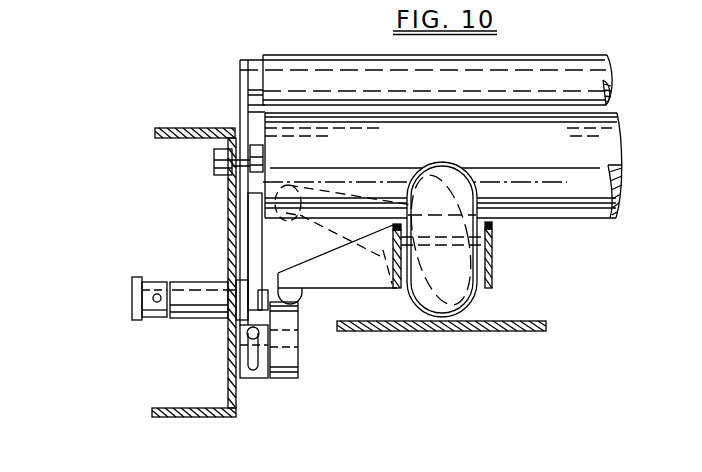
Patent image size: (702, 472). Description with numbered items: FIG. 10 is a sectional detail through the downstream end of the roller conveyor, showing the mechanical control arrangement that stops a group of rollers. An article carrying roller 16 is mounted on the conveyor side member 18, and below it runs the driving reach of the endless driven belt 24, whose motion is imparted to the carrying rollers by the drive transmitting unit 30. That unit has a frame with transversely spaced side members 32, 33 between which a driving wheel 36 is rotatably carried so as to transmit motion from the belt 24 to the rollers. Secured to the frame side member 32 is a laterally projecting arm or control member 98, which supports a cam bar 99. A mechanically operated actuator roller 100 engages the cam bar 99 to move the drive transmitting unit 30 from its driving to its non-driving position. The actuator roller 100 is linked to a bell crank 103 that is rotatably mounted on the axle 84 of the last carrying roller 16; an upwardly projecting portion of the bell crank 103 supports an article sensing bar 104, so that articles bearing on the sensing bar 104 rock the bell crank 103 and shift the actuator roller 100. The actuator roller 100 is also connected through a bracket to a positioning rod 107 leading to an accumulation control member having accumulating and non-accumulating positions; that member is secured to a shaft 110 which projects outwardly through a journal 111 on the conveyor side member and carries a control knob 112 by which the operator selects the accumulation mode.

The article carrying roller 16 is at (622, 183).
The article sensing bar 104 is at (594, 57).
The driving wheel 36 is at (447, 163).
The drive transmitting unit 30 is at (493, 224).
The frame side member 33 is at (493, 277).
The frame side member 32 is at (396, 285).
The arm or control member 98 is at (329, 237).
The cam bar 99 is at (301, 294).
The endless driven belt 24 is at (547, 324).
The bell crank 103 is at (240, 110).
The side member 18 is at (228, 232).
The axle 84 is at (213, 167).
The journal 111 is at (212, 281).
The shaft 110 is at (198, 309).
The control knob 112 is at (150, 277).
The actuator roller 100 is at (299, 364).
The positioning rod 107 is at (248, 378).